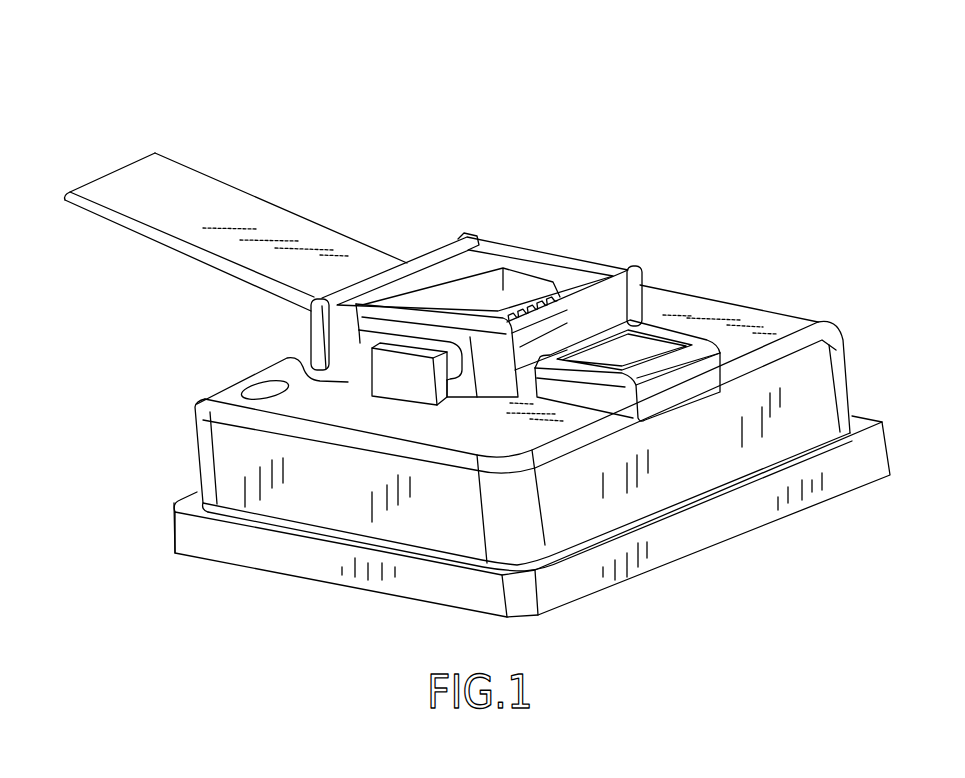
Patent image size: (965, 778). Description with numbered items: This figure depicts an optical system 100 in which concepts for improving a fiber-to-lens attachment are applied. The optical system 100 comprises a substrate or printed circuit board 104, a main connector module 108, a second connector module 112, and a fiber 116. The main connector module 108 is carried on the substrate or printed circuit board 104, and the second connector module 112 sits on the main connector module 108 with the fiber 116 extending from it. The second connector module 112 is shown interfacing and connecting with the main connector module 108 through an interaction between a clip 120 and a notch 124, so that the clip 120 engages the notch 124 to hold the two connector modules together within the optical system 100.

The optical system 100 is at (137, 96).
The substrate or Printed Circuit Board 104 is at (878, 452).
The main connector module 108 is at (836, 357).
The second connector module 112 is at (652, 222).
The fiber 116 is at (290, 213).
The clip 120 is at (403, 385).
The notch 124 is at (320, 324).